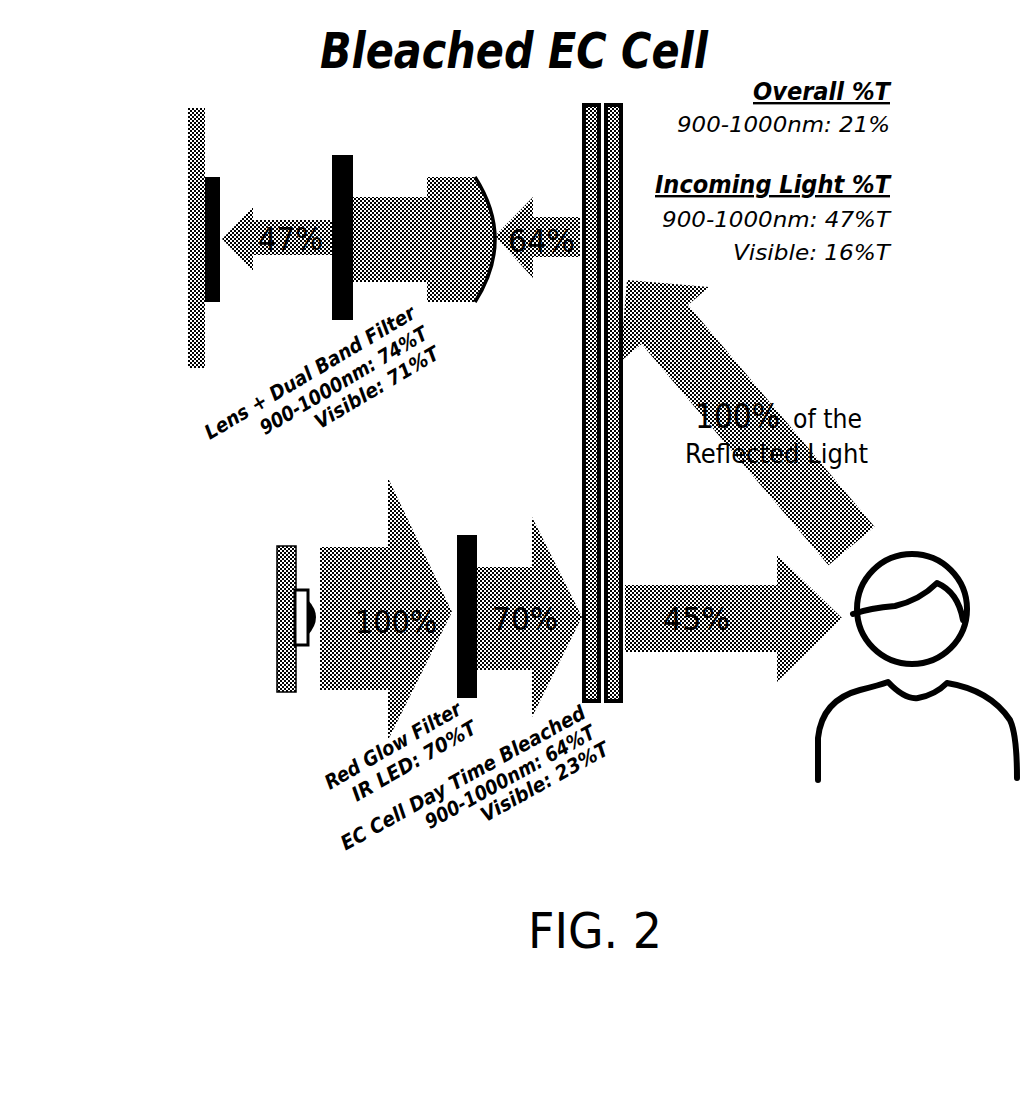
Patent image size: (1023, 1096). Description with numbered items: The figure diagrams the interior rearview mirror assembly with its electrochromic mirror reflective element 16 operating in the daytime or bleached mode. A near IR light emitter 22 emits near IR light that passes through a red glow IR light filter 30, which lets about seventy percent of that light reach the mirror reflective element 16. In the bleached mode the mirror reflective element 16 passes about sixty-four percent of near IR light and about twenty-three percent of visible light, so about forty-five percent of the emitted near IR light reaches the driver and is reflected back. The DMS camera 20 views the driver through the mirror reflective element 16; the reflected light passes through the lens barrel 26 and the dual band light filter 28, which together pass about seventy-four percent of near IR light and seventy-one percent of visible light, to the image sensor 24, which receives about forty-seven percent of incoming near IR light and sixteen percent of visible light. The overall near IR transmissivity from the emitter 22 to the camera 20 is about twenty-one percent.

The mirror reflective element 16 is at (582, 390).
The DMS camera 20 is at (130, 201).
The near IR light emitter 22 is at (277, 566).
The image sensor 24 is at (213, 178).
The lens barrel 26 is at (453, 180).
The dual band light filter 28 is at (355, 173).
The red glow IR light filter 30 is at (465, 535).